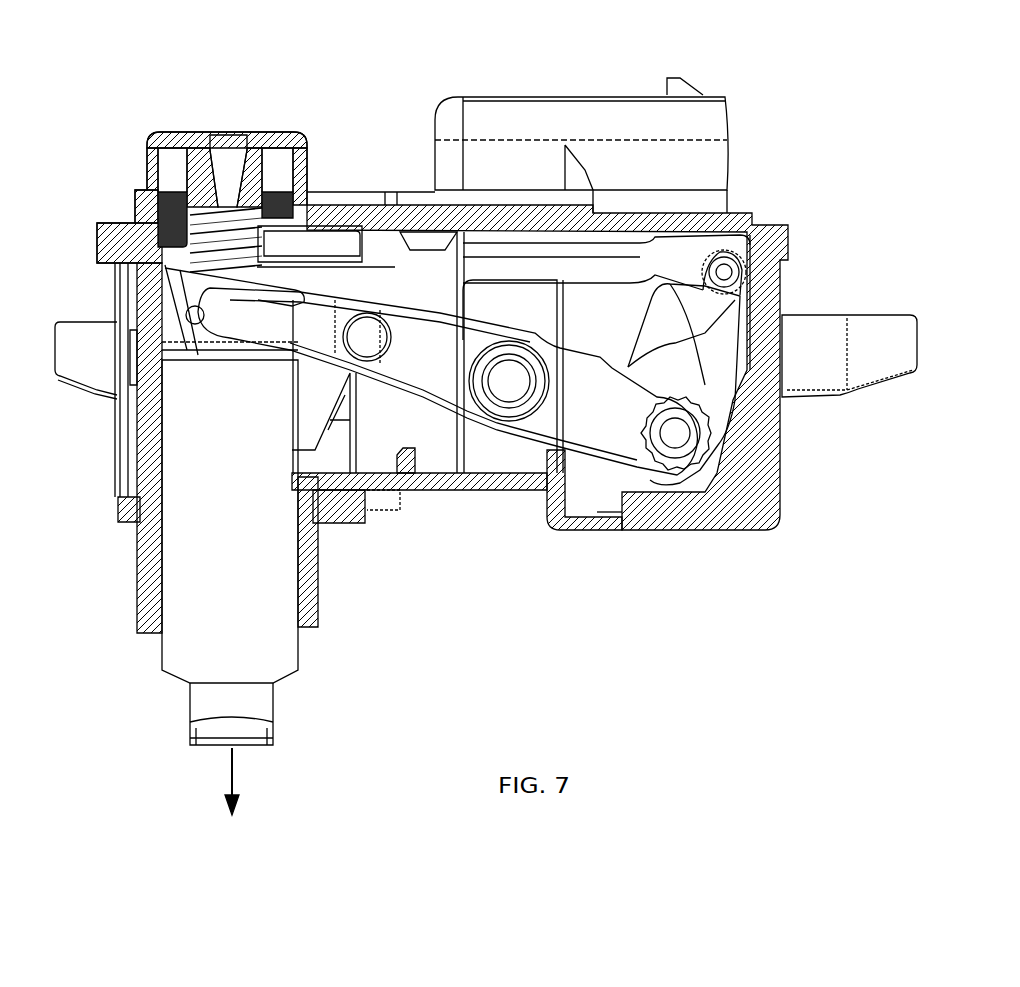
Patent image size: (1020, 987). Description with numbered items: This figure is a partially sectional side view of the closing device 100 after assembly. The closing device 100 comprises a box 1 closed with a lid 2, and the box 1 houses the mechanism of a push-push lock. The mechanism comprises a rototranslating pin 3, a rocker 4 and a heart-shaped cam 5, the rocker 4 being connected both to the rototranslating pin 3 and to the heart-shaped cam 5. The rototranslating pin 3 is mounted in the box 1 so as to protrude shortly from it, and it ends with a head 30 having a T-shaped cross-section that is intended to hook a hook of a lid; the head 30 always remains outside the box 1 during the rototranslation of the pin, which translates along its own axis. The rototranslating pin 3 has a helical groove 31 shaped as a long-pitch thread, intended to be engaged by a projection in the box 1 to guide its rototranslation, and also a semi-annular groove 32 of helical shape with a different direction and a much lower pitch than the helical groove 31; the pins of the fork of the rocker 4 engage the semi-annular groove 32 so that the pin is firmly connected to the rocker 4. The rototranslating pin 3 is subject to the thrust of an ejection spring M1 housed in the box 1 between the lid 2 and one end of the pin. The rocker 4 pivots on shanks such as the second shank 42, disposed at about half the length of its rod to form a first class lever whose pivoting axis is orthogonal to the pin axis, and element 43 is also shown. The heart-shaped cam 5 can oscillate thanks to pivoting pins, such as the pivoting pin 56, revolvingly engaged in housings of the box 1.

The closing device 100 is at (856, 183).
The box 1 is at (108, 500).
The lid 2 is at (742, 213).
The rototranslating pin 3 is at (163, 655).
The head 30 is at (273, 732).
The helical groove 31 is at (178, 293).
The semi-annular groove 32 is at (132, 350).
The rocker 4 is at (577, 458).
The second shank 42 is at (487, 403).
The lever end roller 43 is at (273, 362).
The heart-shaped cam 5 is at (740, 318).
The pivoting pin 56 is at (735, 278).
The ejection spring M1 is at (222, 132).